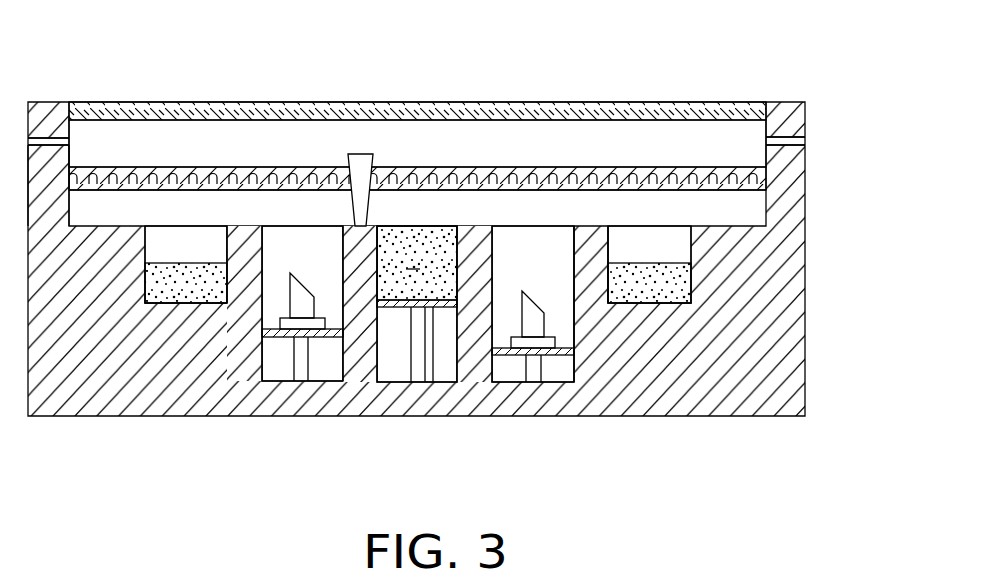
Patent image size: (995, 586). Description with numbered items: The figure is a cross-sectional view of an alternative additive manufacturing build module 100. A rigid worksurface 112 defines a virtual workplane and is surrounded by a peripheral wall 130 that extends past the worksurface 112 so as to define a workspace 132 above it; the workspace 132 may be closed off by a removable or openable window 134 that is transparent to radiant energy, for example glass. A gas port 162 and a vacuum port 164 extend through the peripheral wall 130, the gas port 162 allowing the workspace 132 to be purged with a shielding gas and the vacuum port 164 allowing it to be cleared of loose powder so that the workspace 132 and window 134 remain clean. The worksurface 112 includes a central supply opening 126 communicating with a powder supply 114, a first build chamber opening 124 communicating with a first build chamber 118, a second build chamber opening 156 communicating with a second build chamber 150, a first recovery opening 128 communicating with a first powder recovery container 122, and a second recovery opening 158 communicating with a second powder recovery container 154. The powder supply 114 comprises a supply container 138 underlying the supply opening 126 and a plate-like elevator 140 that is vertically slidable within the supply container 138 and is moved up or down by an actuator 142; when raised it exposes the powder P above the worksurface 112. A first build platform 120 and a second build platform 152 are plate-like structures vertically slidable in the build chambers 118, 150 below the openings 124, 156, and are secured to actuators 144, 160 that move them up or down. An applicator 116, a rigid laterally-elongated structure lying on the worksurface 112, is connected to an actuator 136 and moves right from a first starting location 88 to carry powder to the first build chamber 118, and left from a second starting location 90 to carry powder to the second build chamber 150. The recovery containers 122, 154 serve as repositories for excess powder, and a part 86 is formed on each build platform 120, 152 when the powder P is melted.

The build module 100 is at (416, 233).
The worksurface 112 is at (747, 226).
The powder supply 114 is at (399, 314).
The applicator 116 is at (335, 149).
The first build chamber 118 is at (533, 320).
The first build platform 120 is at (506, 355).
The first powder recovery container 122 is at (665, 243).
The first build chamber opening 124 is at (573, 243).
The central supply opening 126 is at (453, 238).
The first recovery opening 128 is at (690, 242).
The peripheral wall 130 is at (52, 170).
The workspace 132 is at (402, 125).
The window 134 is at (497, 106).
The actuator 136 is at (506, 172).
The supply container 138 is at (393, 366).
The elevator 140 is at (437, 360).
The actuator 142 is at (416, 357).
The actuator 144 is at (532, 372).
The second build chamber 150 is at (289, 323).
The second build platform 152 is at (277, 331).
The second powder recovery container 154 is at (159, 247).
The second build chamber opening 156 is at (263, 238).
The second recovery opening 158 is at (226, 242).
The actuator 160 is at (298, 368).
The gas port 162 is at (52, 145).
The vacuum port 164 is at (778, 142).
The part 86 is at (297, 286).
The first starting location 88 is at (348, 220).
The second starting location 90 is at (482, 236).